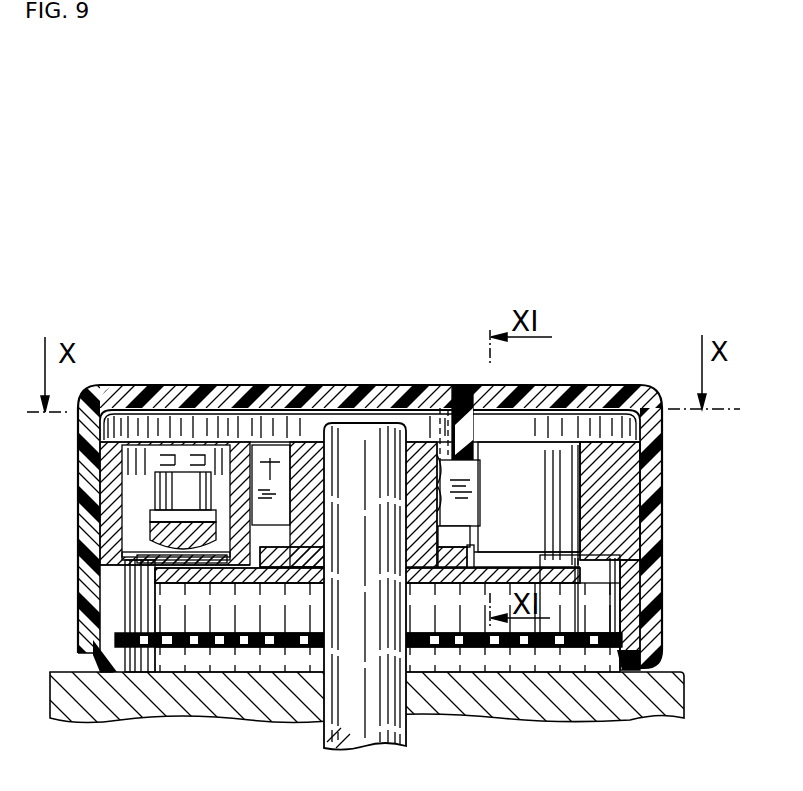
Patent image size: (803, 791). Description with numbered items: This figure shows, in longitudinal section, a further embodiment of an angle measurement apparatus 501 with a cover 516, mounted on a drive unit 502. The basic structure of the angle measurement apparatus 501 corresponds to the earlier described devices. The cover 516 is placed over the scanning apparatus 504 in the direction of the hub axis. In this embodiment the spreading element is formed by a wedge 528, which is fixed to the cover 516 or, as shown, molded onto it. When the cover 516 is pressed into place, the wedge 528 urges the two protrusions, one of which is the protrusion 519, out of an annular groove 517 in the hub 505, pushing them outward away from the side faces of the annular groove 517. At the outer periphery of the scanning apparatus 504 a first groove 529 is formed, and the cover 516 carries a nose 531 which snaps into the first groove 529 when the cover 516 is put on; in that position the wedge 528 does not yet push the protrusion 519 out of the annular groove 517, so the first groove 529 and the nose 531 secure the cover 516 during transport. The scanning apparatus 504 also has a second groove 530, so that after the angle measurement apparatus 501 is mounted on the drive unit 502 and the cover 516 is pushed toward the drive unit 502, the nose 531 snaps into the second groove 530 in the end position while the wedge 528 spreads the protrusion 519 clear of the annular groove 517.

The angle measurement apparatus 501 is at (579, 357).
The drive unit 502 is at (540, 706).
The scanning apparatus 504 is at (613, 464).
The hub 505 is at (470, 551).
The cover 516 is at (285, 410).
The annular groove 517 is at (310, 488).
The protrusion 519 is at (262, 455).
The wedge 528 is at (465, 385).
The first groove 529 is at (645, 582).
The second groove 530 is at (640, 660).
The nose 531 is at (637, 637).